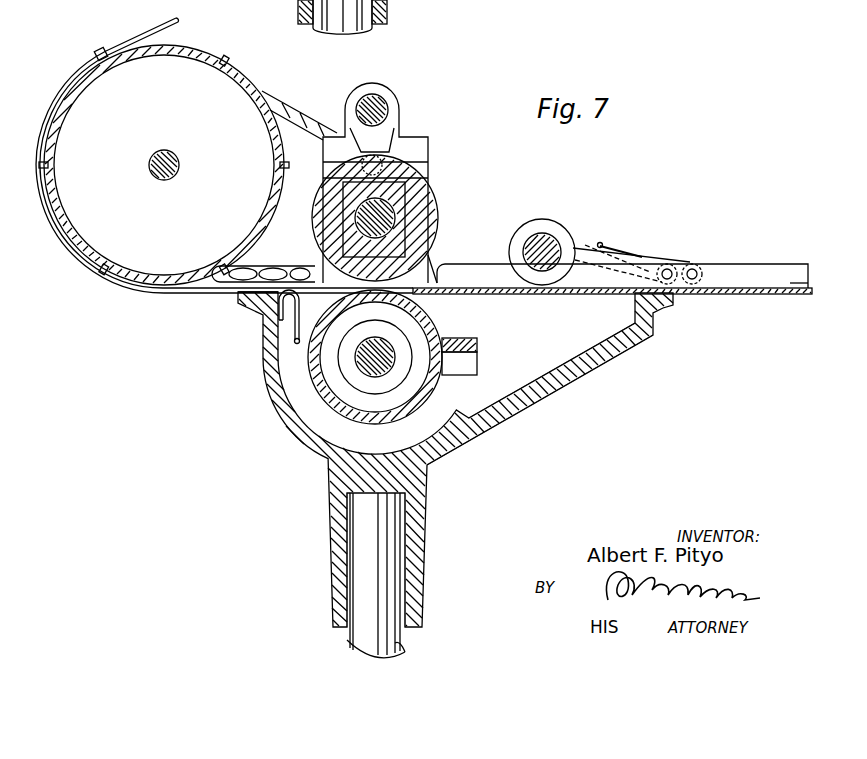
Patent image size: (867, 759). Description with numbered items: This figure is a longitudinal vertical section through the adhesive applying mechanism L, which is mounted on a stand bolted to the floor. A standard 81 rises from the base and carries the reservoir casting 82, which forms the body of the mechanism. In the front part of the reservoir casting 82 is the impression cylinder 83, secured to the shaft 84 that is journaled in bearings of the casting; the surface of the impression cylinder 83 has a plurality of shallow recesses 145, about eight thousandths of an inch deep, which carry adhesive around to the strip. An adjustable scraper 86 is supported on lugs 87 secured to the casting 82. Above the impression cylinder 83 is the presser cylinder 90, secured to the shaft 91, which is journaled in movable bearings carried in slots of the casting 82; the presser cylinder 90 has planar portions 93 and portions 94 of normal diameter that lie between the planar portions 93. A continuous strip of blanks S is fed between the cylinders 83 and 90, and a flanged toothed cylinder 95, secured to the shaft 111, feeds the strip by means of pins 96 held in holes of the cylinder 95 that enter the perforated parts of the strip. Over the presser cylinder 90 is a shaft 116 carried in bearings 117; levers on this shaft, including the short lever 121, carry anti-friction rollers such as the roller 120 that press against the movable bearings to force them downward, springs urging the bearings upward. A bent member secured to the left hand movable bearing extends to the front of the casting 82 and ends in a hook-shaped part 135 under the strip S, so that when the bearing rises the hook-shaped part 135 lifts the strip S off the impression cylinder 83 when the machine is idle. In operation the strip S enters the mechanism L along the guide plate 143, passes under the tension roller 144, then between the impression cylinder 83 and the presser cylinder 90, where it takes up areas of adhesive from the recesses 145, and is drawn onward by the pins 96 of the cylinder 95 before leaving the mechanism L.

The standard 81 is at (352, 560).
The reservoir casting 82 is at (282, 428).
The impression cylinder 83 is at (322, 348).
The shaft 84 is at (362, 366).
The adjustable scraper 86 is at (451, 339).
The lugs 87 is at (504, 413).
The presser cylinder 90 is at (437, 194).
The shaft 91 is at (397, 213).
The planar portions 93 is at (433, 248).
The portions of normal diameter 94 is at (428, 173).
The flanged toothed cylinder 95 is at (78, 84).
The pins 96 is at (100, 48).
The shaft 111 is at (171, 157).
The shaft 116 is at (386, 107).
The bearings 117 is at (421, 142).
The anti-friction roller 120 is at (351, 165).
The short lever 121 is at (361, 139).
The hook-shaped part 135 is at (278, 318).
The guide plate 143 is at (755, 296).
The tension roller 144 is at (554, 231).
The recesses 145 is at (425, 416).
The adhesive applying mechanism L is at (274, 180).
The strip of blanks S is at (693, 272).